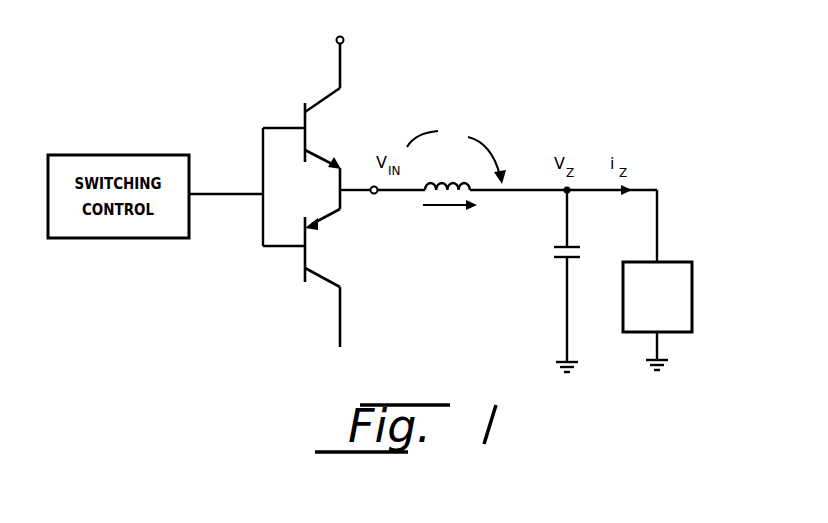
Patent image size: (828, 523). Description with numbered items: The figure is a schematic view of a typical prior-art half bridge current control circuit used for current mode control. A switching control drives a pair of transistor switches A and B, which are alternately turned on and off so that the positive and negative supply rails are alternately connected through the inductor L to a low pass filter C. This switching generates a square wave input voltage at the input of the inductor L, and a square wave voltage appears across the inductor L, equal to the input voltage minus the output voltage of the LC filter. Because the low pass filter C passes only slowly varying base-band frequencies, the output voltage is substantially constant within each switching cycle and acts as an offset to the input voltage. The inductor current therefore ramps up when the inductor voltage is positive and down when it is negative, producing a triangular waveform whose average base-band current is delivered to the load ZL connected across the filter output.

The transistor switch A is at (331, 102).
The transistor switch B is at (332, 280).
The inductor L is at (456, 181).
The low pass filter C is at (555, 281).
The load ZL is at (657, 316).